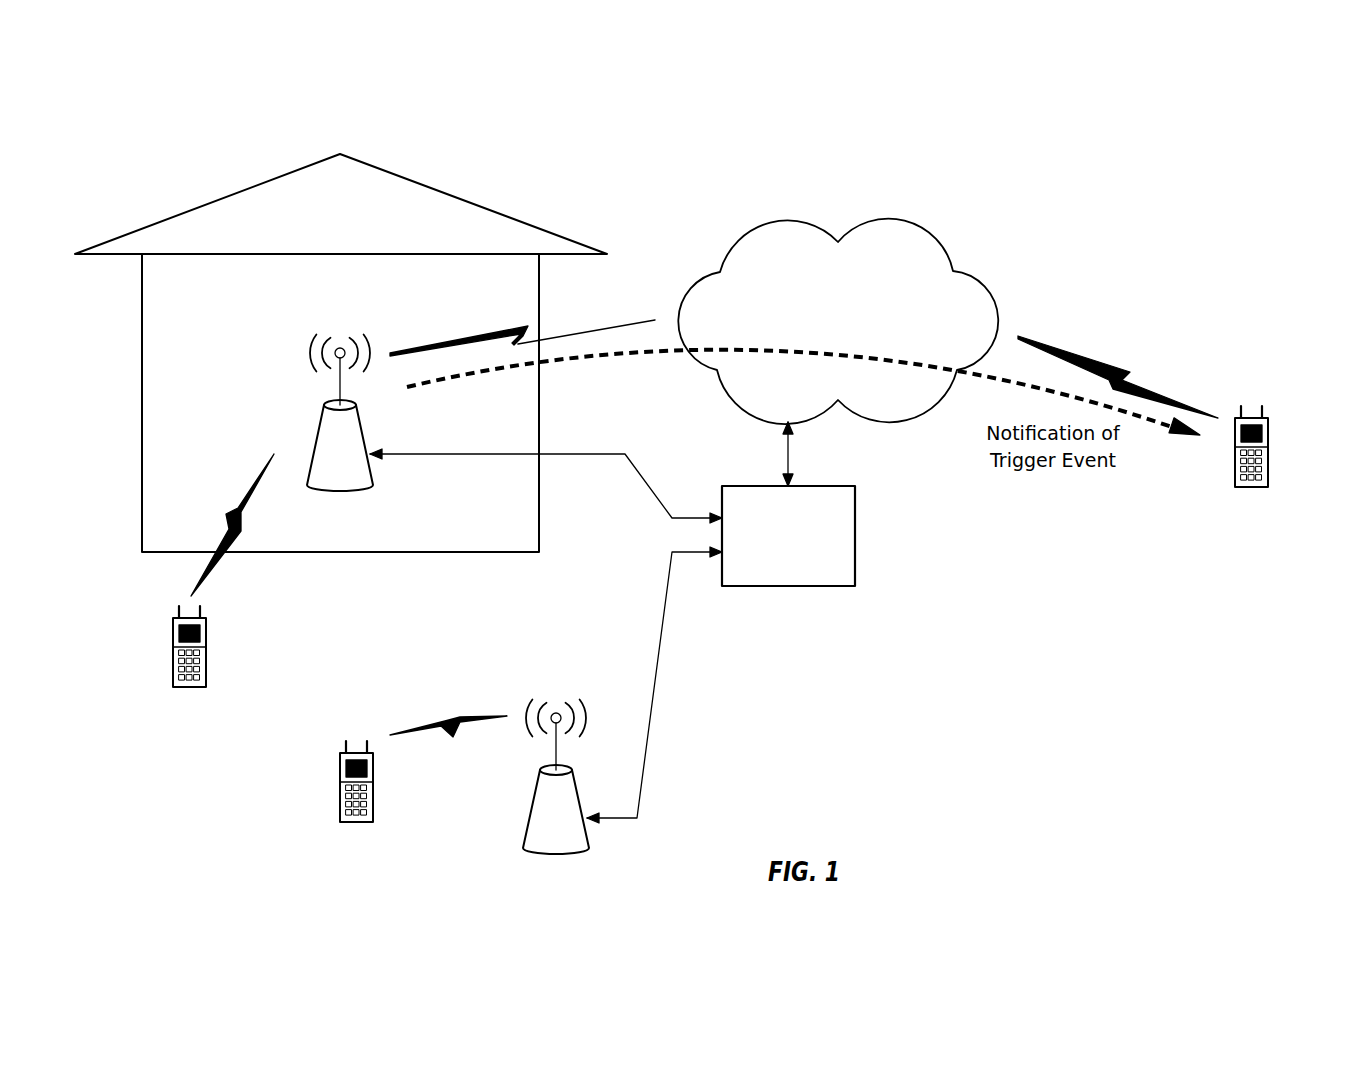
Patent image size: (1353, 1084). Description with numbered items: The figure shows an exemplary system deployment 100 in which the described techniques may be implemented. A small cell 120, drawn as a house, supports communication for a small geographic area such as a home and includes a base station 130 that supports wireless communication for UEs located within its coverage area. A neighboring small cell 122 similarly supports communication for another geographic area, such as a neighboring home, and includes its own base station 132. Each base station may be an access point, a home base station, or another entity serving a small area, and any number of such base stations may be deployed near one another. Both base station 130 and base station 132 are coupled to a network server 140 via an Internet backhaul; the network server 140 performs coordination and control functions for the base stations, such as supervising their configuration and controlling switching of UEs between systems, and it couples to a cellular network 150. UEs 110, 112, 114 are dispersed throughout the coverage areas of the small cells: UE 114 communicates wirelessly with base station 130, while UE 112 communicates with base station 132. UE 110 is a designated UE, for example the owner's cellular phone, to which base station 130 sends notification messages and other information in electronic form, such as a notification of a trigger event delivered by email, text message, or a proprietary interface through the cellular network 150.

The system deployment 100 is at (1074, 216).
The UE 110 is at (1269, 453).
The UE 112 is at (340, 784).
The UE 114 is at (172, 652).
The small cell 120 is at (250, 348).
The small cell 122 is at (480, 663).
The base station 130 is at (310, 455).
The base station 132 is at (525, 819).
The network server 140 is at (816, 485).
The cellular network 150 is at (883, 220).